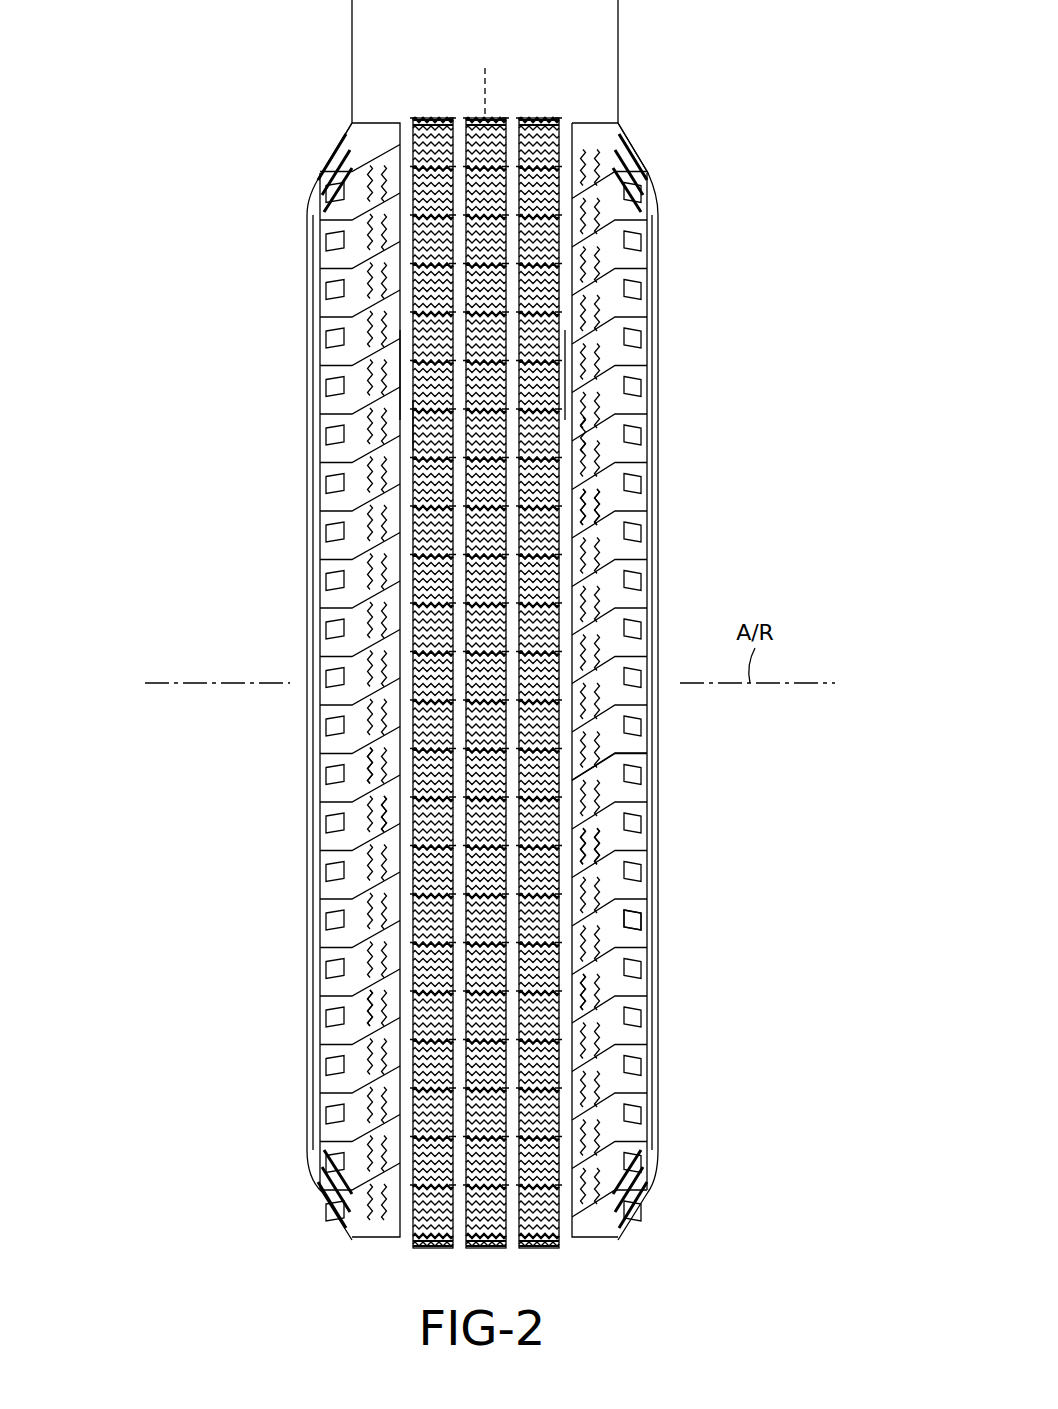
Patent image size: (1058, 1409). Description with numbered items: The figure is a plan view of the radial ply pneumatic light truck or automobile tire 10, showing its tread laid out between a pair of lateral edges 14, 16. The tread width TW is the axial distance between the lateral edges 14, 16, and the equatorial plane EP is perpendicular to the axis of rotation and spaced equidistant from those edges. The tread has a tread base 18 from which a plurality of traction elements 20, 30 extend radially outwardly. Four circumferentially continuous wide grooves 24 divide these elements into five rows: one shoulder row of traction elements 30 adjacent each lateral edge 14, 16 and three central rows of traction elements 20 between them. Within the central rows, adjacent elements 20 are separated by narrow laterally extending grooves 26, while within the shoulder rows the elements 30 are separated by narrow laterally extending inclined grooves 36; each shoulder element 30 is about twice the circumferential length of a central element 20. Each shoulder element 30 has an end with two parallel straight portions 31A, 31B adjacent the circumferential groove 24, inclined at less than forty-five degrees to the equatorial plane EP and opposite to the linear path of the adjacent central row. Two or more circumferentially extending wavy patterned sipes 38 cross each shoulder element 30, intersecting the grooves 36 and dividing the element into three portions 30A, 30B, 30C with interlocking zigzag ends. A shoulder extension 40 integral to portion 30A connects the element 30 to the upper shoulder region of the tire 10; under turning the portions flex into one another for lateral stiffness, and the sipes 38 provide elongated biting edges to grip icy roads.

The tire 10 is at (280, 272).
The lateral edge 14 is at (618, 123).
The lateral edge 16 is at (352, 123).
The tread base 18 is at (405, 375).
The traction element 20 is at (545, 612).
The circumferentially continuous wide groove 24 is at (460, 1000).
The narrow laterally extending groove 26 is at (420, 425).
The traction element 30 is at (360, 555).
The portion 30A is at (600, 805).
The portion 30B is at (580, 830).
The portion 30C is at (580, 848).
The straight portion 31A is at (390, 765).
The straight portion 31B is at (390, 800).
The narrow laterally extending inclined groove 36 is at (590, 435).
The wavy patterned sipe 38 is at (598, 512).
The shoulder extension 40 is at (620, 905).
The tread width TW is at (618, 14).
The equatorial plane EP is at (484, 80).